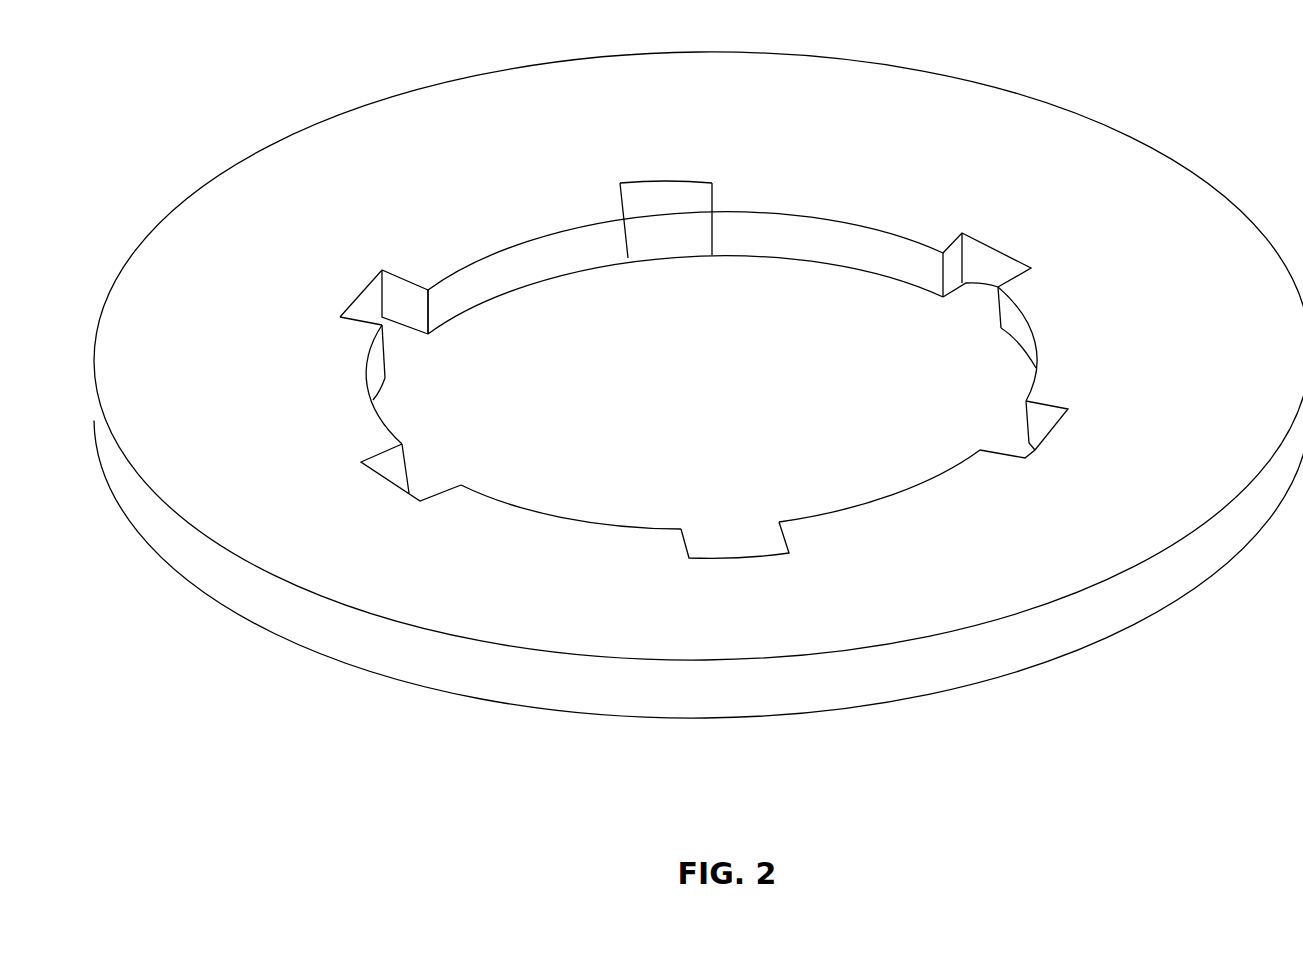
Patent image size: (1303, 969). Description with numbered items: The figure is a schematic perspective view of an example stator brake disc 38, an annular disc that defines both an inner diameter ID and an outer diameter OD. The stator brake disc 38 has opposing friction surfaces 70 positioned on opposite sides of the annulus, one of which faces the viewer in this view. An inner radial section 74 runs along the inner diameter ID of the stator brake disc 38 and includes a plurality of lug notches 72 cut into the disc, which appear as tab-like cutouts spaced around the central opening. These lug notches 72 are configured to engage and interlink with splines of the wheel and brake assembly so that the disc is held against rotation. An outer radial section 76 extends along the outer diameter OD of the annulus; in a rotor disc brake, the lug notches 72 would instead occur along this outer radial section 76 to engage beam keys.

The stator brake disc 38 is at (697, 407).
The friction surfaces 70 is at (697, 356).
The lug notches 72 is at (704, 369).
The inner radial section 74 is at (701, 363).
The outer radial section 76 is at (698, 388).
The outer diameter OD is at (838, 57).
The inner diameter ID is at (765, 237).